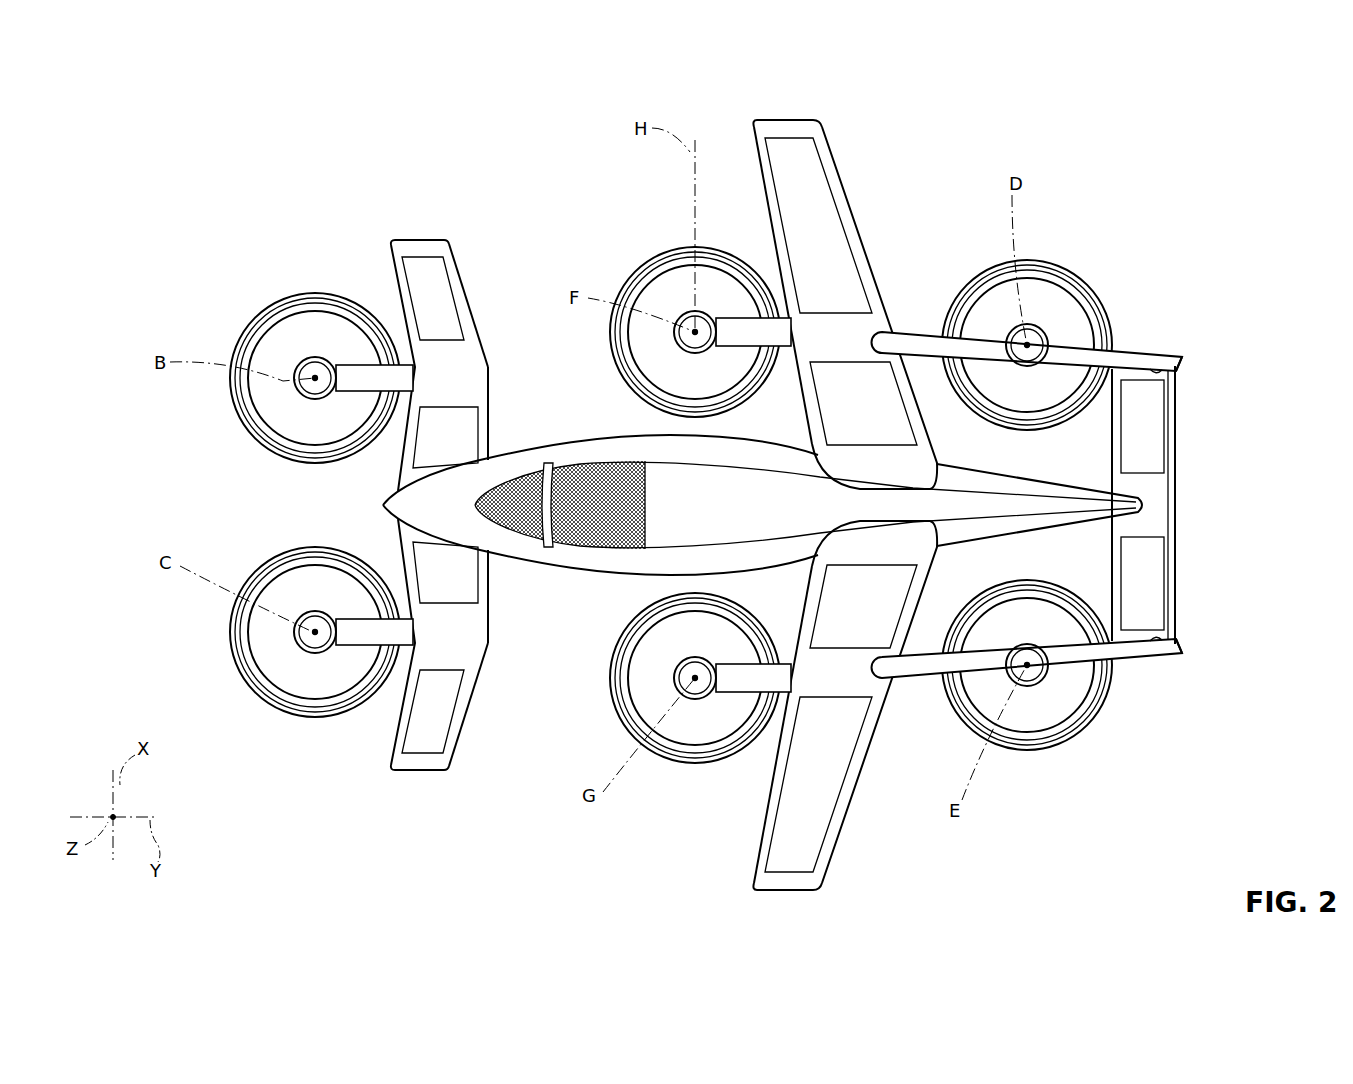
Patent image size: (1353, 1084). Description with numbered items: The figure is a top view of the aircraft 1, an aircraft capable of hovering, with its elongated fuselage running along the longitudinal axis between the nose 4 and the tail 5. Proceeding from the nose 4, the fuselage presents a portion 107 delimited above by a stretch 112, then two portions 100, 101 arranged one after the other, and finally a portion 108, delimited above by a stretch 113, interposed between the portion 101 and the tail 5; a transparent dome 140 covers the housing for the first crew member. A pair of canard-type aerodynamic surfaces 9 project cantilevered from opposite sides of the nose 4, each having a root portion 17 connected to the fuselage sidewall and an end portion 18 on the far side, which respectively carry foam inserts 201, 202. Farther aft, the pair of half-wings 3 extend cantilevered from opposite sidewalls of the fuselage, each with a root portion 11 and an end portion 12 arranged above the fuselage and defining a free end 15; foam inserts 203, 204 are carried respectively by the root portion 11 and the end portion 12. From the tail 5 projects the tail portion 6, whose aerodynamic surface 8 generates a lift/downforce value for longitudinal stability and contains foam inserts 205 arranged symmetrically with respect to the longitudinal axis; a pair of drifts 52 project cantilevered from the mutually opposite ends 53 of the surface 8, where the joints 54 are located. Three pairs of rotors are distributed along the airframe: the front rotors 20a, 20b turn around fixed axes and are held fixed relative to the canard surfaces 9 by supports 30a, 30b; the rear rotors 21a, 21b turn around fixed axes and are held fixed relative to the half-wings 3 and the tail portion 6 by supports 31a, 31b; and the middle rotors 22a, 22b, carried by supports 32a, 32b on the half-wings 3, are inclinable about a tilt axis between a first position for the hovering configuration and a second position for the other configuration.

The aircraft 1 is at (1057, 124).
The half-wings 3 is at (836, 501).
The nose 4 is at (772, 489).
The tail 5 is at (1148, 507).
The tail portion 6 is at (1198, 498).
The aerodynamic surface 8 is at (1151, 426).
The canard-type aerodynamic surfaces 9 is at (478, 496).
The root portions 11 is at (919, 428).
The end portions 12 is at (855, 222).
The free ends 15 is at (795, 119).
The root portions 17 is at (488, 424).
The end portions 18 is at (420, 239).
The rotor 20a is at (316, 350).
The rotor 20b is at (282, 665).
The rotor 21a is at (1027, 309).
The rotor 21b is at (1027, 700).
The rotor 22a is at (700, 296).
The rotor 22b is at (700, 703).
The support 30a is at (362, 377).
The support 30b is at (360, 636).
The support 31a is at (1078, 345).
The support 31b is at (1072, 688).
The support 32a is at (738, 330).
The support 32b is at (735, 683).
The drifts 52 is at (1196, 365).
The ends 53 is at (1169, 369).
The tail fin joint 54 is at (1156, 369).
The portion 100 is at (805, 515).
The portion 101 is at (592, 481).
The portion 107 is at (625, 426).
The portion 108 is at (914, 290).
The stretch 112 is at (453, 510).
The stretch 113 is at (1029, 490).
The transparent dome 140 is at (600, 534).
The foam insert 201 is at (440, 264).
The foam insert 202 is at (465, 410).
The foam insert 203 is at (782, 155).
The foam insert 204 is at (835, 405).
The foam inserts 205 is at (1155, 458).